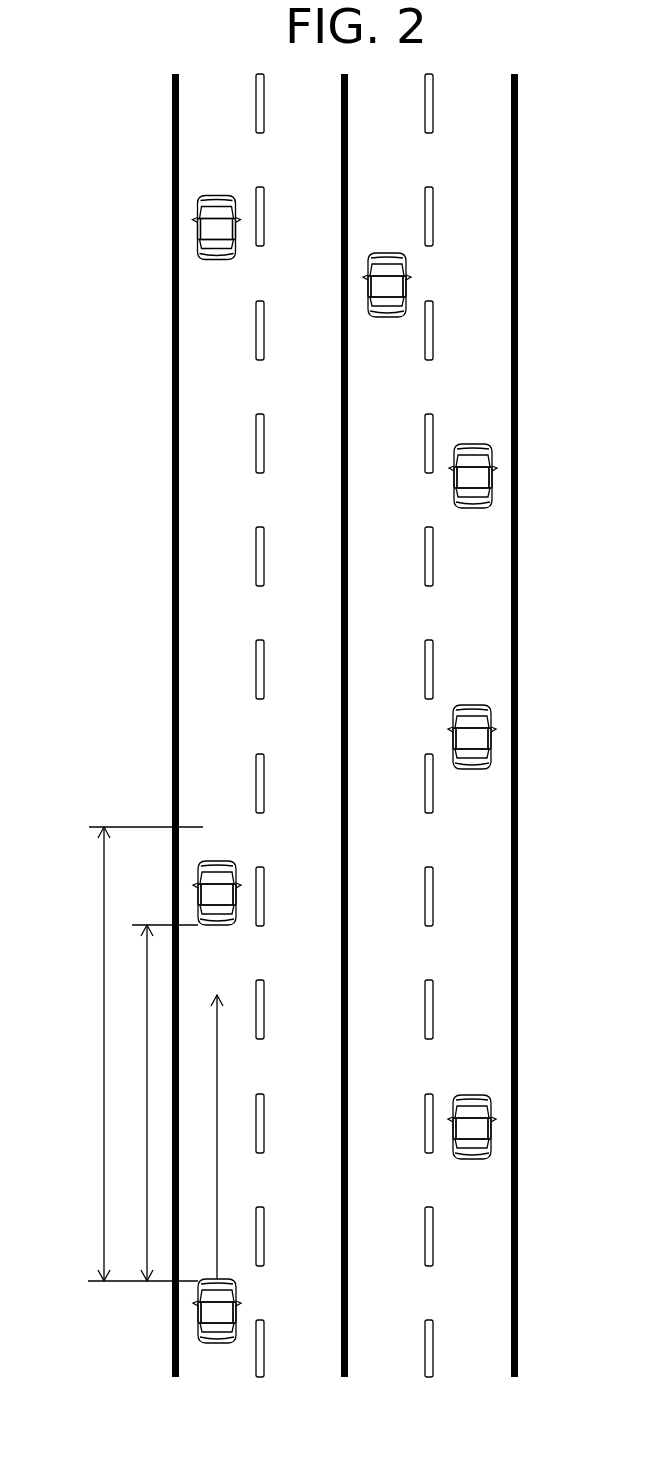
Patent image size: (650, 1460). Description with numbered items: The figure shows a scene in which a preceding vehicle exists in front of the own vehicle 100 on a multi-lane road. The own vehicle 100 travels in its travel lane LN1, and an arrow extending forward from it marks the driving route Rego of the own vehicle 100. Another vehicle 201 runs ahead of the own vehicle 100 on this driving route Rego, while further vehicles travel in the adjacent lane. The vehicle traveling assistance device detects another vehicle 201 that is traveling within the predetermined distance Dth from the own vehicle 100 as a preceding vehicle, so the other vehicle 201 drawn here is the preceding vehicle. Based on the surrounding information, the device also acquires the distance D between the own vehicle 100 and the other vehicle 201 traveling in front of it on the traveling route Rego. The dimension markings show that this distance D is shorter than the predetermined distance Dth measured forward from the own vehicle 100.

The own vehicle 100 is at (238, 1303).
The other vehicle 201 is at (217, 927).
The travel lane LN1 is at (240, 769).
The driving route Rego is at (218, 1068).
The distance D is at (160, 1103).
The predetermined distance Dth is at (126, 1054).